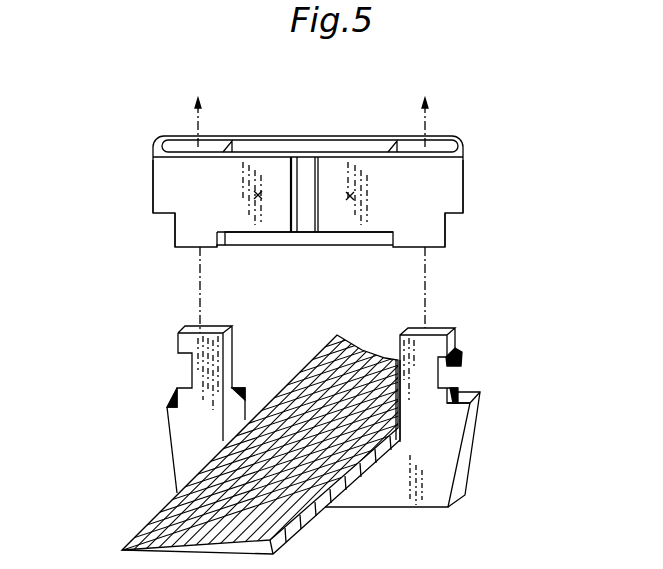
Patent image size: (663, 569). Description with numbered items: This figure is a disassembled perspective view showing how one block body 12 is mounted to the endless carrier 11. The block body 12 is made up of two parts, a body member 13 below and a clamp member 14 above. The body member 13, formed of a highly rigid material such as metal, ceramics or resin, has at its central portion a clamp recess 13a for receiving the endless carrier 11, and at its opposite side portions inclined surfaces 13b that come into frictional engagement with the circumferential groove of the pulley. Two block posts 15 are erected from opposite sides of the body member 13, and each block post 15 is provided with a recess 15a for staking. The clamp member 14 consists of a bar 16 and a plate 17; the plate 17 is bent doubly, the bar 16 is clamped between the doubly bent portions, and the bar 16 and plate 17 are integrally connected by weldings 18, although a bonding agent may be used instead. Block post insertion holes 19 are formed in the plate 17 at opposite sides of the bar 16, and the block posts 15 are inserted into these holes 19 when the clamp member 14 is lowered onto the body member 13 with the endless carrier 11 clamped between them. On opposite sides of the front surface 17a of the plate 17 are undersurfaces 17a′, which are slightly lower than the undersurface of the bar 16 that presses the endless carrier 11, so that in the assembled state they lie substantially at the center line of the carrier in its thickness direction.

The endless carrier 11 is at (318, 510).
The block body 12 is at (172, 302).
The body member 13 is at (435, 493).
The clamp recess 13a is at (227, 419).
The inclined surfaces 13b is at (171, 457).
The clamp member 14 is at (259, 132).
The block posts 15 is at (181, 343).
The recess for staking 15a is at (192, 367).
The bar 16 is at (308, 167).
The plate 17 is at (373, 168).
The front surface 17a is at (167, 181).
The undersurfaces 17a′ is at (182, 250).
The weldings 18 is at (253, 193).
The block post insertion holes 19 is at (183, 147).